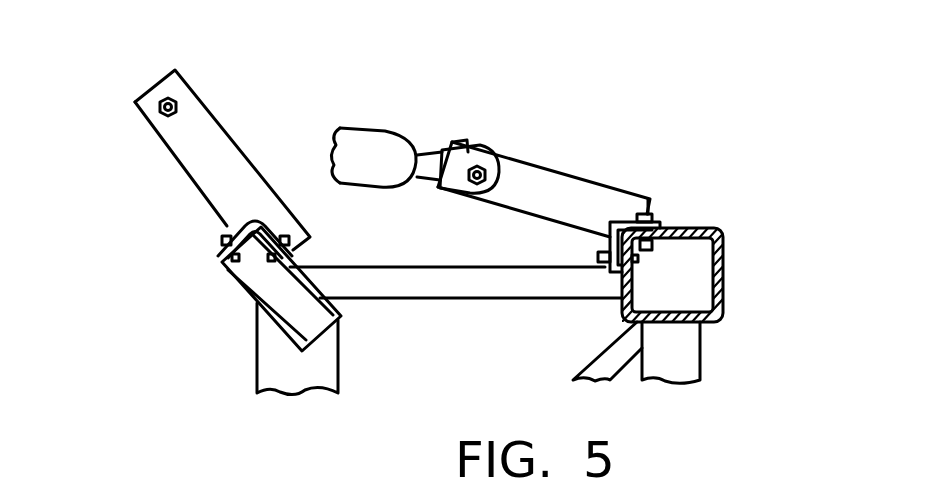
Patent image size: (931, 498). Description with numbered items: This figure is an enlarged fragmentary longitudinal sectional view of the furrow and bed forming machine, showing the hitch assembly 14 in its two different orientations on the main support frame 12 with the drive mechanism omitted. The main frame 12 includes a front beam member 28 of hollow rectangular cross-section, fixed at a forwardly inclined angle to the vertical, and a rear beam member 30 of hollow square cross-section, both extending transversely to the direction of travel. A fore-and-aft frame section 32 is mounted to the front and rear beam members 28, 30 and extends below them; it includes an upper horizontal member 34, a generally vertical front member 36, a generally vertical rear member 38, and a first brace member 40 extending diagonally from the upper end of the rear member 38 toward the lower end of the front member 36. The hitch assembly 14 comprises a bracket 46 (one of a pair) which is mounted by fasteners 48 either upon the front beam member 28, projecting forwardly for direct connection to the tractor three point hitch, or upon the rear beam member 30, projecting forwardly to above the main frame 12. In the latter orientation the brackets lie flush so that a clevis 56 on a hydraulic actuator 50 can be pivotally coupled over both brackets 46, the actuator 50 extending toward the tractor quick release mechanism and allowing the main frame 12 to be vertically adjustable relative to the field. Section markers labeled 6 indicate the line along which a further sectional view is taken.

The section line 6- 6 is at (78, 92).
The main support frame 12 is at (730, 218).
The hitch assembly 14 is at (373, 79).
The front beam member 28 is at (282, 330).
The rear beam member 30 is at (723, 263).
The frame section 32 is at (240, 380).
The upper horizontal member 34 is at (435, 290).
The front member 36 is at (340, 373).
The rear member 38 is at (700, 352).
The first brace member 40 is at (585, 362).
The bracket 46 is at (163, 137).
The fastener 48 is at (213, 232).
The hydraulic actuator 50 is at (380, 132).
The clevis 56 is at (457, 163).